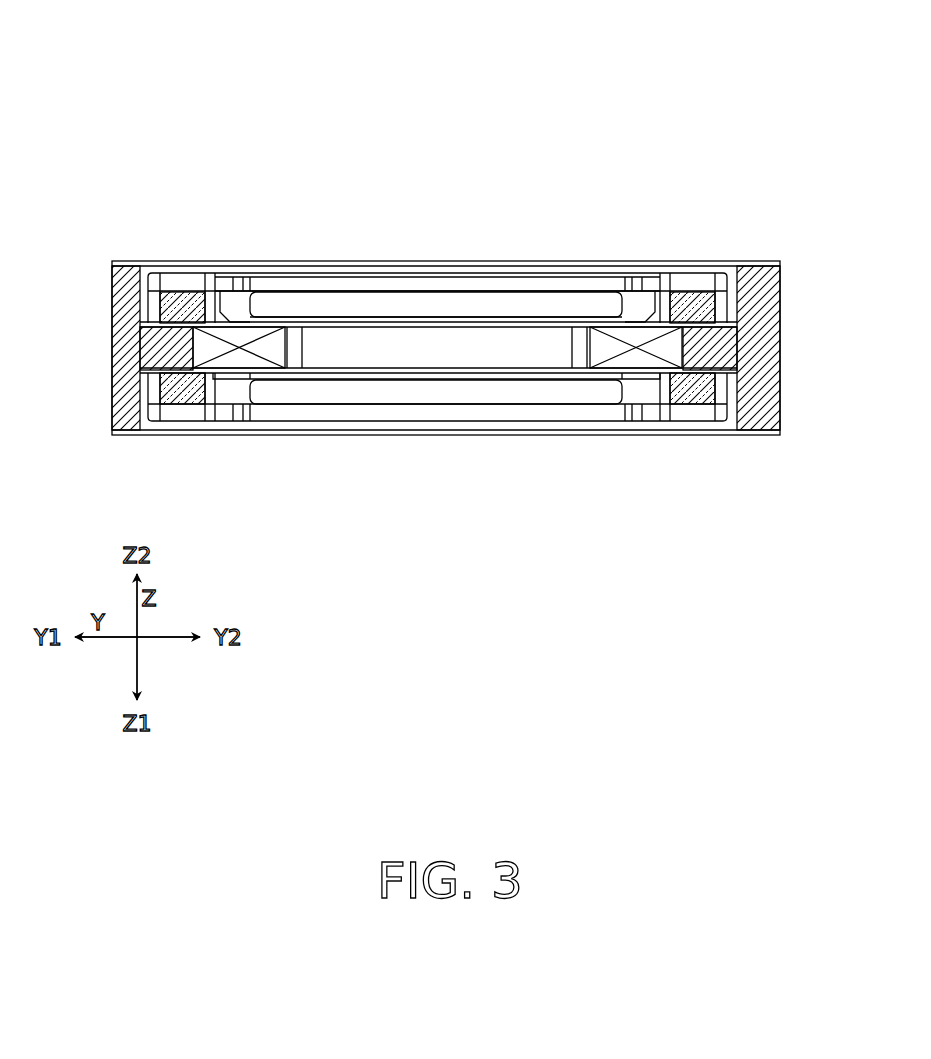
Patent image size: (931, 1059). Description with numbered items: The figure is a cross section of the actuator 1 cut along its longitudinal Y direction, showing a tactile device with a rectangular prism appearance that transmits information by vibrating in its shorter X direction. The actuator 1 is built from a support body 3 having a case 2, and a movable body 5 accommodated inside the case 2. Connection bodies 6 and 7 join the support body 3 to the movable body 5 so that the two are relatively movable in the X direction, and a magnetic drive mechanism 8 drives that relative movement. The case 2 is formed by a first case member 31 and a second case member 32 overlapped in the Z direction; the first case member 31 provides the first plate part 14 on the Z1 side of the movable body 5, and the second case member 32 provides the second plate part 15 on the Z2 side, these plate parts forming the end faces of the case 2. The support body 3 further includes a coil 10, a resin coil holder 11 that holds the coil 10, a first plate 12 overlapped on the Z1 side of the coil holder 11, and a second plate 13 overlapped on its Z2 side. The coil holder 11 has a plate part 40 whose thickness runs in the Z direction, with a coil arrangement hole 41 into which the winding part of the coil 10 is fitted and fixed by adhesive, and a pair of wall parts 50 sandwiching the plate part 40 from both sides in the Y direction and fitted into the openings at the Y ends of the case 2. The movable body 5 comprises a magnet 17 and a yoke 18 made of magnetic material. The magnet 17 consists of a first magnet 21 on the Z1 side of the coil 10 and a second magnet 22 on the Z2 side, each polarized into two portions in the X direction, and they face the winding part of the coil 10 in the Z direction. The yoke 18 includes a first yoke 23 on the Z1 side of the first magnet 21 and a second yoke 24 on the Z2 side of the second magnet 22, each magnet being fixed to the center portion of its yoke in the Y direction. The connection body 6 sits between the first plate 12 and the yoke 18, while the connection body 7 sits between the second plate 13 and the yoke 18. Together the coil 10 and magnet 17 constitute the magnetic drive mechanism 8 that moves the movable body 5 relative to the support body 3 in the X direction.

The actuator 1 is at (215, 115).
The case 2 is at (293, 206).
The support body 3 is at (243, 170).
The movable body 5 is at (407, 534).
The connection body 6 is at (190, 398).
The connection body 7 is at (172, 297).
The magnetic drive mechanism 8 is at (240, 385).
The coil 10 is at (625, 337).
The coil holder 11 is at (178, 345).
The first plate 12 is at (460, 382).
The second plate 13 is at (422, 320).
The first plate part 14 is at (278, 432).
The second plate part 15 is at (628, 262).
The magnet 17 is at (565, 497).
The yoke 18 is at (382, 497).
The first magnet 21 is at (493, 392).
The second magnet 22 is at (525, 307).
The first yoke 23 is at (350, 378).
The second yoke 24 is at (395, 287).
The first case member 31 is at (357, 290).
The second case member 32 is at (322, 280).
The plate part 40 is at (717, 347).
The coil arrangement hole 41 is at (673, 350).
The wall part 50 is at (113, 369).